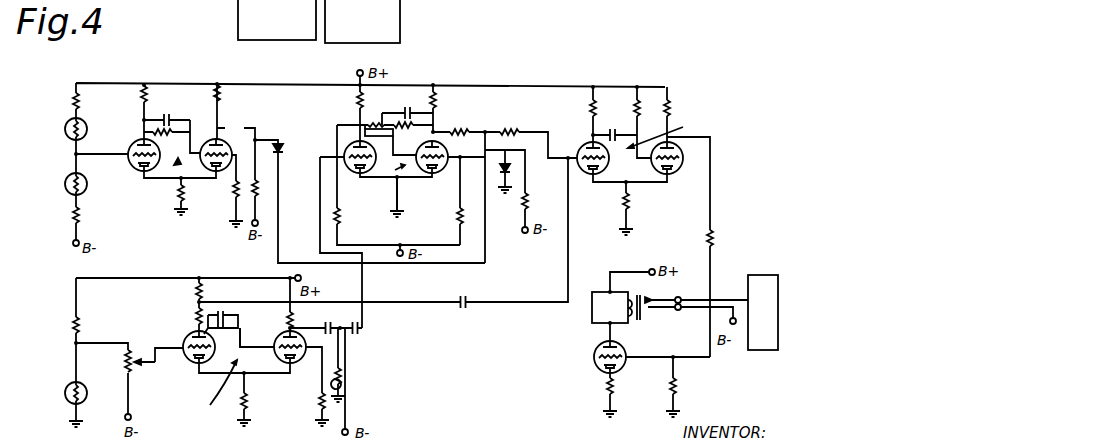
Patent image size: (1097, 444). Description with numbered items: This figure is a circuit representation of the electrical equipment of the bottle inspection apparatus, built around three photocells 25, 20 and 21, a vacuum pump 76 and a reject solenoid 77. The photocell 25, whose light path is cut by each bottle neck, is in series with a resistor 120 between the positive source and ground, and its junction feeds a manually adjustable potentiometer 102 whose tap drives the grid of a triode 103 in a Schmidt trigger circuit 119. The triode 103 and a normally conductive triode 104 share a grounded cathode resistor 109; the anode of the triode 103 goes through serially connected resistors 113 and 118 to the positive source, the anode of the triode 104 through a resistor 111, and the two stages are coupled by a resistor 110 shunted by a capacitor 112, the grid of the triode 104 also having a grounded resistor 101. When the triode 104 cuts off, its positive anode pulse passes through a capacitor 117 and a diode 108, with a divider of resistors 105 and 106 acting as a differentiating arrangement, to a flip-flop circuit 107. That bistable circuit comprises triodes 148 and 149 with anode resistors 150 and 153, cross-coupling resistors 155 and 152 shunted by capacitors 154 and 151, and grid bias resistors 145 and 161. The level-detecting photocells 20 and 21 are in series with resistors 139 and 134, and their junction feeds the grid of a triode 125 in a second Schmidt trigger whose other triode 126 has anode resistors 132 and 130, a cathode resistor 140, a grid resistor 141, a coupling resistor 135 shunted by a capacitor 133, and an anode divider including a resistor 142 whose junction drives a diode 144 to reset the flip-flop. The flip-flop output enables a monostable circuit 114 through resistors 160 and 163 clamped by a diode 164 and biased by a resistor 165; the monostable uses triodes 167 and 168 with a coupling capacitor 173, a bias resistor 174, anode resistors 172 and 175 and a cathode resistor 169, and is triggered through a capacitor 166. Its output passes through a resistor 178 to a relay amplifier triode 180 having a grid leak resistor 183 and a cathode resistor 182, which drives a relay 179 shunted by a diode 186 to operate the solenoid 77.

The photocell 20 is at (65, 129).
The photocell 21 is at (65, 184).
The photocell 25 is at (65, 393).
The vacuum pump 76 is at (238, 8).
The solenoid 77 is at (770, 292).
The grounded resistor 101 is at (320, 398).
The potentiometer 102 is at (134, 355).
The triode 103 is at (192, 365).
The triode 104 is at (275, 345).
The resistor 105 is at (346, 388).
The Schmidt trigger circuit 106 is at (341, 375).
The flip-flop circuit 107 is at (398, 190).
The diode 108 is at (358, 334).
The grounded cathode resistor 109 is at (246, 400).
The resistor 110 is at (232, 331).
The resistor 111 is at (292, 320).
The capacitor 112 is at (224, 314).
The resistor 113 is at (197, 316).
The monostable circuit 114 is at (668, 133).
The capacitor 117 is at (328, 326).
The resistor 118 is at (201, 292).
The Schmidt trigger circuit 119 is at (212, 388).
The resistor 120 is at (76, 330).
The triode 125 is at (130, 162).
The triode 126 is at (230, 153).
The resistor 130 is at (217, 100).
The resistor 132 is at (144, 100).
The capacitor 133 is at (166, 116).
The resistor 134 is at (76, 220).
The resistor 135 is at (176, 128).
The resistor 139 is at (76, 100).
The grounded cathode resistor 140 is at (178, 200).
The resistor 141 is at (236, 190).
The resistor 142 is at (255, 188).
The diode 144 is at (280, 143).
The resistor 145 is at (339, 222).
The triode 148 is at (345, 150).
The triode 149 is at (445, 170).
The resistor 150 is at (358, 100).
The capacitor 151 is at (407, 112).
The resistor 152 is at (396, 128).
The resistor 153 is at (435, 100).
The capacitor 154 is at (391, 167).
The resistor 155 is at (368, 124).
The resistor 160 is at (456, 130).
The resistor 161 is at (459, 220).
The resistor 163 is at (508, 128).
The diode 164 is at (525, 155).
The resistor 165 is at (524, 203).
The capacitor 166 is at (460, 310).
The triode 167 is at (580, 152).
The triode 168 is at (690, 150).
The grounded cathode resistor 169 is at (628, 202).
The resistor 172 is at (593, 110).
The capacitor 173 is at (618, 120).
The biasing resistor 174 is at (636, 112).
The resistor 175 is at (669, 110).
The resistor 178 is at (712, 238).
The relay 179 is at (648, 314).
The triode 180 is at (595, 353).
The cathode resistor 182 is at (608, 388).
The grid leak resistor 183 is at (675, 388).
The diode 186 is at (592, 314).